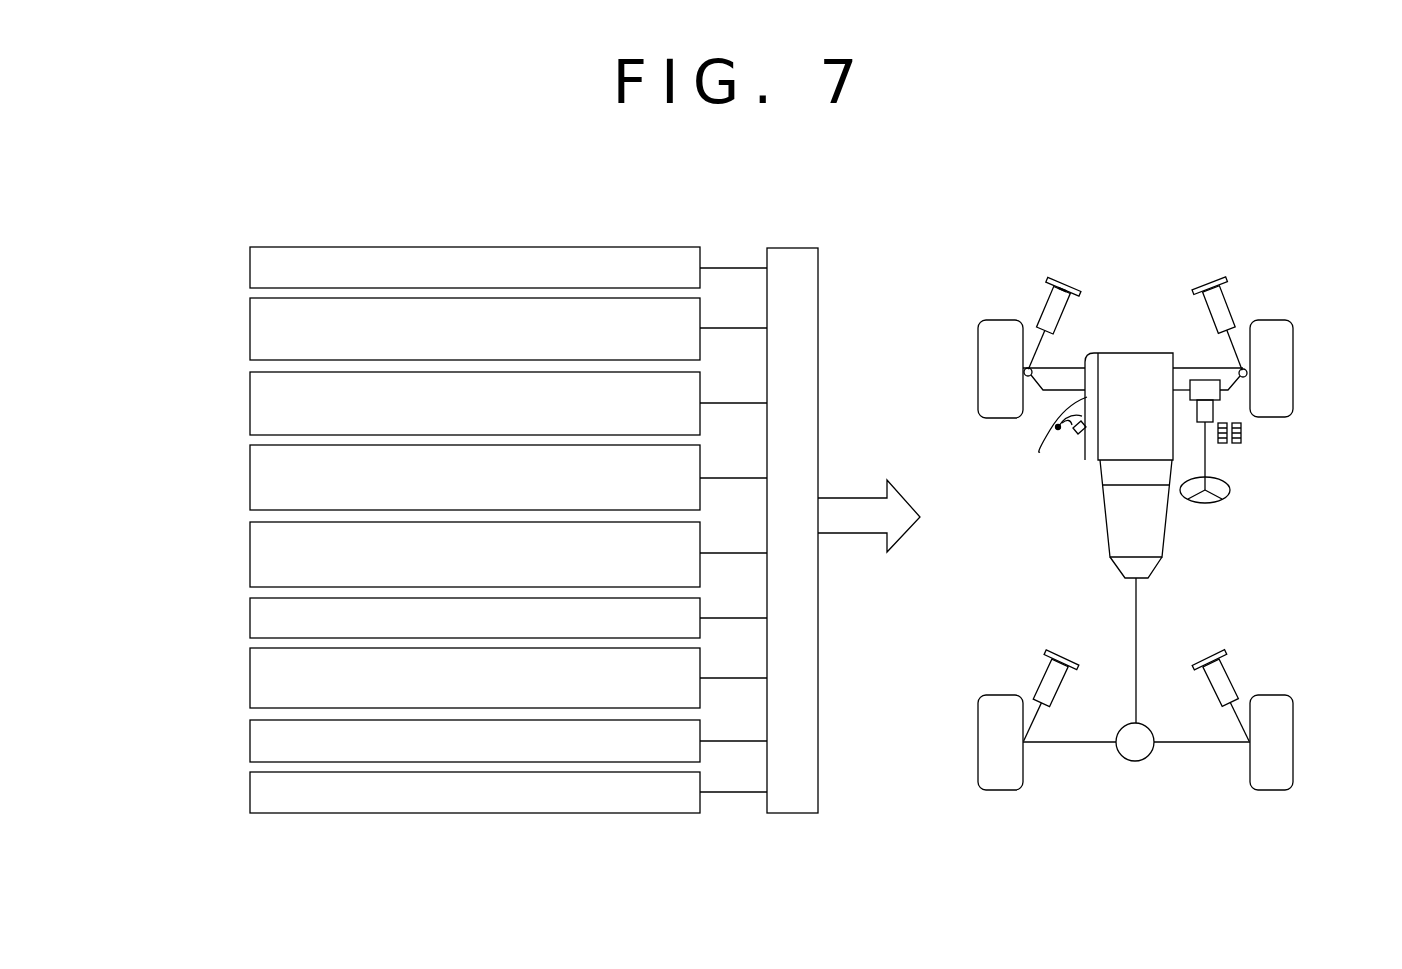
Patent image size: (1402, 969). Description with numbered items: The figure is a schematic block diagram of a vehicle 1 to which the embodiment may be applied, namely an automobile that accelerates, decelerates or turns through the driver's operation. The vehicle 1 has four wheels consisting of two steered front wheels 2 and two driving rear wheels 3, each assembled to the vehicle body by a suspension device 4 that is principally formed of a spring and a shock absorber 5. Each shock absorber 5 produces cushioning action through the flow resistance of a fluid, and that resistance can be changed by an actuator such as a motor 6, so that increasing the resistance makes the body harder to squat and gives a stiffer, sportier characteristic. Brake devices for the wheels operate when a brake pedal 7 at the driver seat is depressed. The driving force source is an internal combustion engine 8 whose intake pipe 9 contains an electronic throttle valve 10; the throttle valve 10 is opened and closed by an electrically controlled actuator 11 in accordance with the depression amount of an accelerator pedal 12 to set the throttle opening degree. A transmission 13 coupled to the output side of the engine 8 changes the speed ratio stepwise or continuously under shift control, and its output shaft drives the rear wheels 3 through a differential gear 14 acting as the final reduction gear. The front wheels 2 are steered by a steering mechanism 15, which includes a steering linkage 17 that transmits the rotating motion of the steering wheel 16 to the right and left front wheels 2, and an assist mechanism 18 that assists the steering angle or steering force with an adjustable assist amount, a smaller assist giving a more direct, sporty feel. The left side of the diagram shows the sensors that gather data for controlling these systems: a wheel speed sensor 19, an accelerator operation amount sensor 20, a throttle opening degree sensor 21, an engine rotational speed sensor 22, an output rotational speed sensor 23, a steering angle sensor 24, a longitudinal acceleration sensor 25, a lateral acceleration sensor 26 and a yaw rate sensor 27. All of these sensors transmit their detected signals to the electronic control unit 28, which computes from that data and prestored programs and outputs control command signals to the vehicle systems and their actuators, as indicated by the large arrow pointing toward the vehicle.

The vehicle 1 is at (988, 292).
The front wheels 2 is at (990, 343).
The rear wheels 3 is at (998, 792).
The suspension device 4 is at (1049, 268).
The shock absorber 5 is at (1067, 312).
The motor 6 is at (1065, 285).
The brake pedal 7 is at (1243, 432).
The engine 8 is at (1129, 406).
The intake pipe 9 is at (1040, 438).
The throttle valve 10 is at (1055, 431).
The actuator 11 is at (1074, 436).
The accelerator pedal 12 is at (1220, 445).
The transmission 13 is at (1163, 535).
The differential gear 14 is at (1138, 763).
The steering mechanism 15 is at (1190, 365).
The steering wheel 16 is at (1213, 504).
The steering linkage 17 is at (1233, 383).
The assist mechanism 18 is at (1205, 378).
The wheel speed sensor 19 is at (250, 270).
The accelerator operation amount sensor 20 is at (250, 330).
The throttle opening degree sensor 21 is at (250, 405).
The engine rotational speed sensor 22 is at (250, 480).
The output rotational speed sensor 23 is at (250, 555).
The steering angle sensor 24 is at (250, 620).
The longitudinal acceleration sensor 25 is at (250, 680).
The lateral acceleration sensor 26 is at (250, 743).
The yaw rate sensor 27 is at (250, 794).
The electronic control unit 28 is at (793, 248).